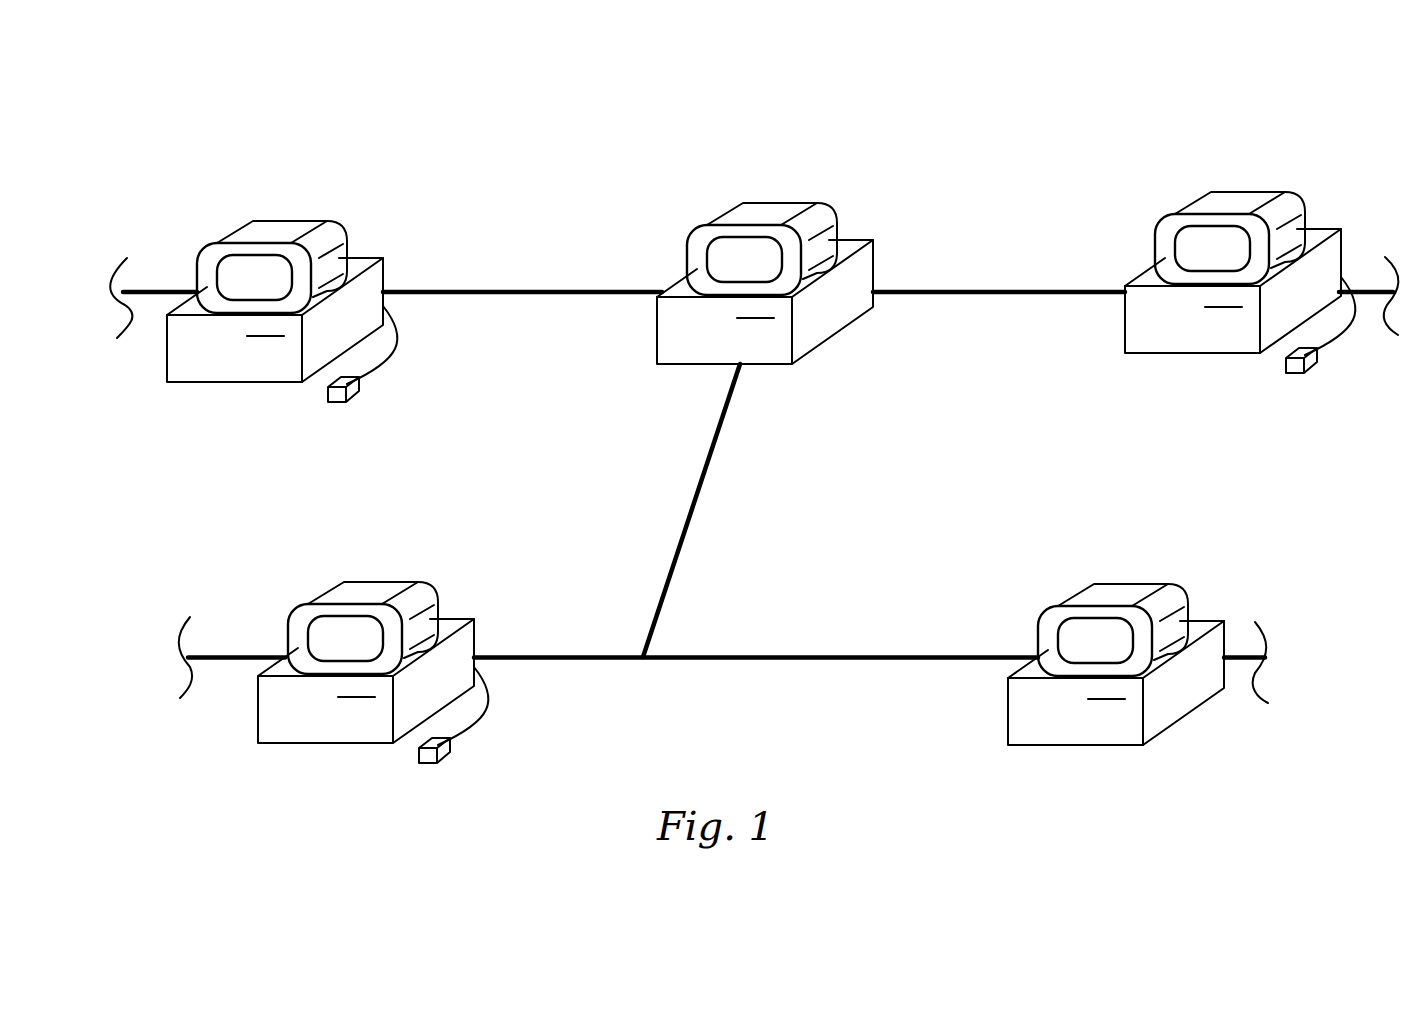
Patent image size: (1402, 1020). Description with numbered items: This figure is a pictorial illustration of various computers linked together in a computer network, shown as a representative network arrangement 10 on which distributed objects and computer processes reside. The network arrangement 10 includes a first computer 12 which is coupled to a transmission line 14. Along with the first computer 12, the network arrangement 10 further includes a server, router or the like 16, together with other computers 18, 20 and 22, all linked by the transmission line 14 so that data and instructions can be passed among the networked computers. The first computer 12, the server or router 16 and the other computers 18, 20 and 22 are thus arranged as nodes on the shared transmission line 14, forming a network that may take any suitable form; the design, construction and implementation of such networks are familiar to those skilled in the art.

The network arrangement 10 is at (165, 127).
The first computer 12 is at (367, 253).
The transmission line 14 is at (475, 295).
The server, router or the like 16 is at (853, 238).
The other computer 18 is at (453, 616).
The other computer 20 is at (1197, 621).
The other computer 22 is at (1125, 332).